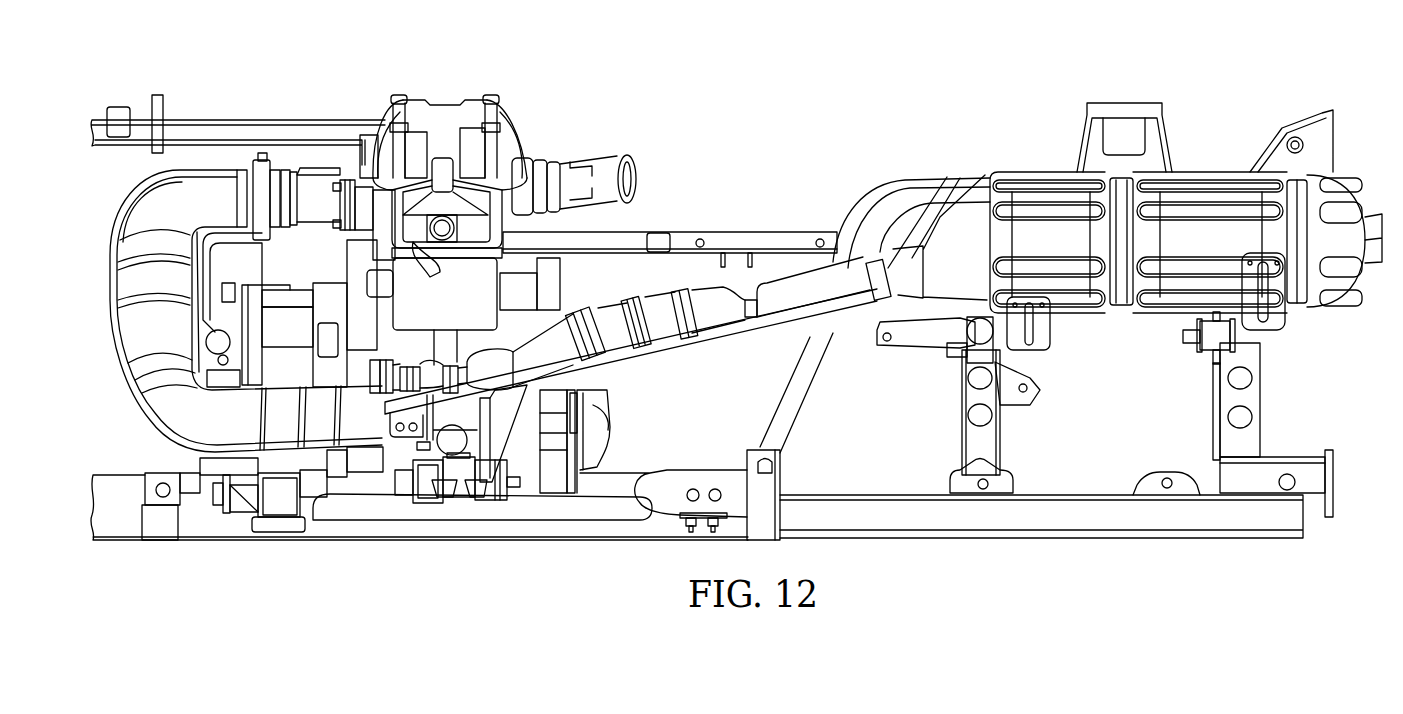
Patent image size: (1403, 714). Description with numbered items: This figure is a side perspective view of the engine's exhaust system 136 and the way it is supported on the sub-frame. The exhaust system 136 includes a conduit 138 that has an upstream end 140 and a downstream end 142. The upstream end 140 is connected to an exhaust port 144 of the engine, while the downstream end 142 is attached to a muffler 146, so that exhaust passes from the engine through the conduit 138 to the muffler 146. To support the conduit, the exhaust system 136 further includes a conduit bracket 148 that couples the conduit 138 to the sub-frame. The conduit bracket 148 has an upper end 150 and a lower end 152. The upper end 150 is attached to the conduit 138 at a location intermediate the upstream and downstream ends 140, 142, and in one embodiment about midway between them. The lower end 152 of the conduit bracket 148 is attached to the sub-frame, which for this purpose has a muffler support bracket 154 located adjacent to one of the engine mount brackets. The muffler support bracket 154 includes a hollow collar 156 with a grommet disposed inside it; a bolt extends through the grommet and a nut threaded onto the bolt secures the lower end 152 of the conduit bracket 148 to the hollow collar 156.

The exhaust system 136 is at (745, 200).
The conduit 138 is at (645, 293).
The upstream end 140 is at (302, 167).
The downstream end 142 is at (880, 247).
The exhaust port 144 is at (354, 162).
The muffler 146 is at (1210, 170).
The conduit bracket 148 is at (492, 418).
The upper end 150 is at (502, 400).
The lower end 152 is at (500, 457).
The muffler support bracket 154 is at (464, 503).
The hollow collar 156 is at (458, 498).